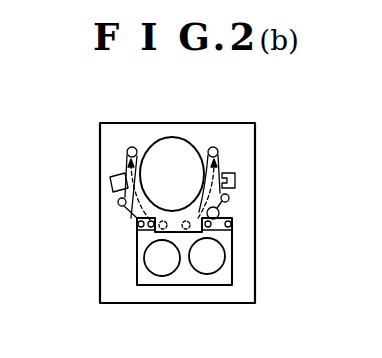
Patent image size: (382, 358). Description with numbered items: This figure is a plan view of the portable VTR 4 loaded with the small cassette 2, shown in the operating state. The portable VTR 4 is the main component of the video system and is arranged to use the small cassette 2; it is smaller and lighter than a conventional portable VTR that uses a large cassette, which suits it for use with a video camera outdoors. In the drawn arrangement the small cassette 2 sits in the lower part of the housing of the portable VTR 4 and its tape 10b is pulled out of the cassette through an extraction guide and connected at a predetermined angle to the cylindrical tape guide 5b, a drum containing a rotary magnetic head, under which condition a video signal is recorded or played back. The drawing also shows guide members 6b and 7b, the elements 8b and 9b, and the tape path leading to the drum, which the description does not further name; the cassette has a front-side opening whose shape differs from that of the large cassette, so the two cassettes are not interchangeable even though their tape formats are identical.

The small cassette 2 is at (232, 272).
The portable VTR 4 is at (208, 124).
The cylindrical tape guide 5b is at (172, 148).
The left arm pivot shaft 6b is at (128, 150).
The right arm pivot shaft 7b is at (219, 150).
The left stopper block 8b is at (110, 181).
The right stopper block 9b is at (236, 181).
The tape 10b is at (228, 200).